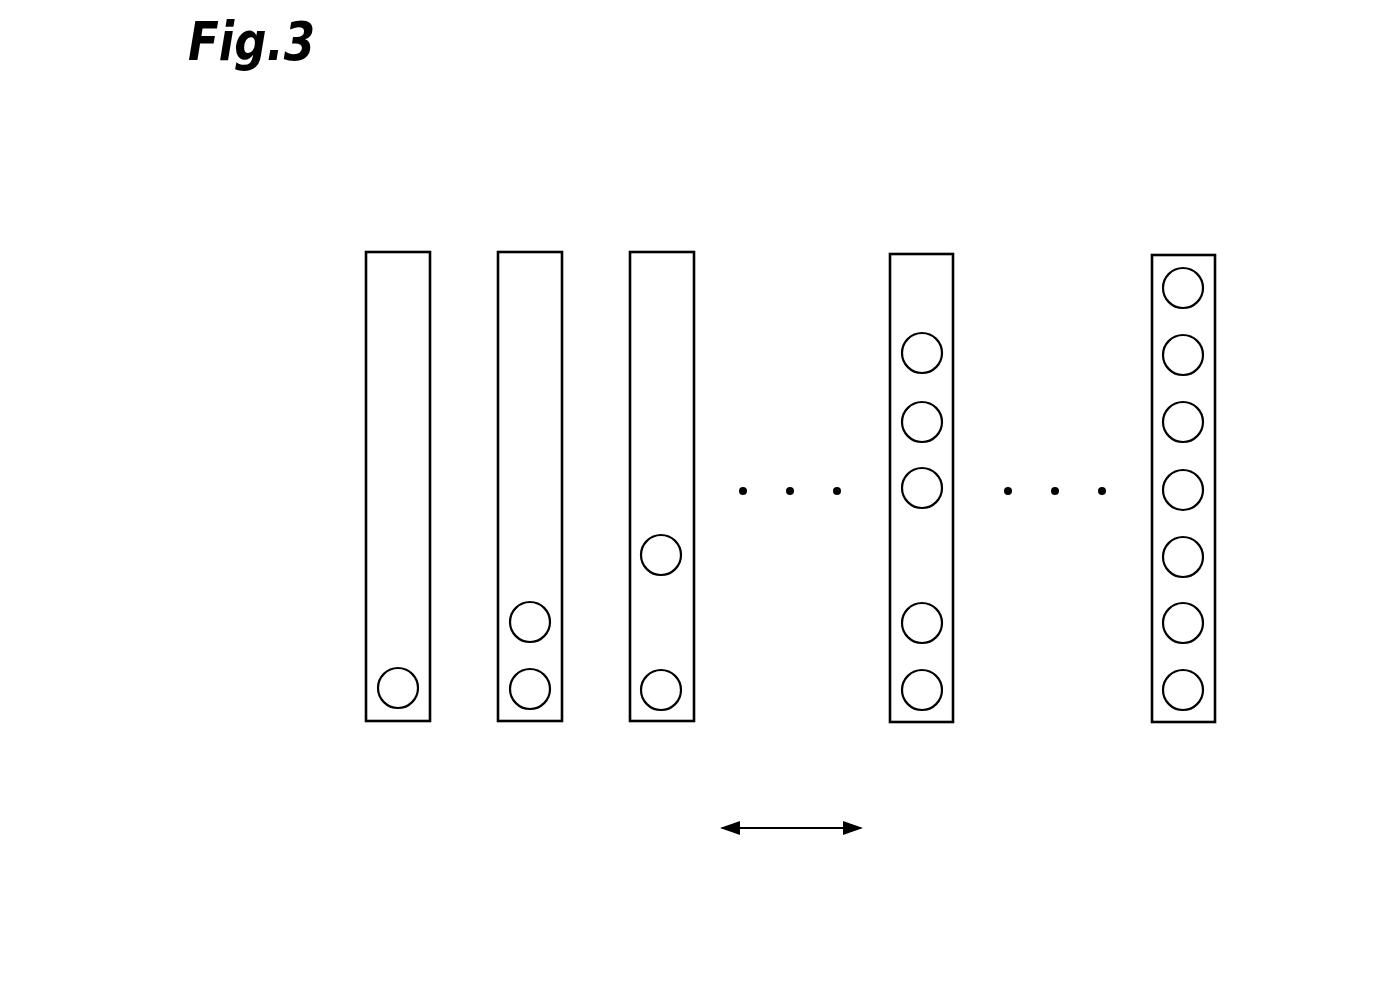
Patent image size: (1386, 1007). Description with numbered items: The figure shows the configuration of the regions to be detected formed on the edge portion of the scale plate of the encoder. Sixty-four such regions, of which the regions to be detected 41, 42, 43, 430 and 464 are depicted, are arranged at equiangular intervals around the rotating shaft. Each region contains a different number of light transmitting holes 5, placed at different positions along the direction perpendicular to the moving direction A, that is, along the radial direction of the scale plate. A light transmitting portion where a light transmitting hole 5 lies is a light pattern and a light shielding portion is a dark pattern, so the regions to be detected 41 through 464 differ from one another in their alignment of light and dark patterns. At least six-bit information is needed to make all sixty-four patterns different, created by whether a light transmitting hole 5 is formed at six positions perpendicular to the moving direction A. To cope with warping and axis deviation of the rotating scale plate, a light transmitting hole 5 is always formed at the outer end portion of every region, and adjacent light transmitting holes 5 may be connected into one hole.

The first region to be detected 41 is at (394, 252).
The second region to be detected 42 is at (533, 252).
The third region to be detected 43 is at (658, 252).
The thirtieth region to be detected 430 is at (921, 254).
The sixty-fourth region to be detected 464 is at (1186, 255).
The light transmitting hole 5 is at (410, 700).
The moving direction A is at (794, 830).